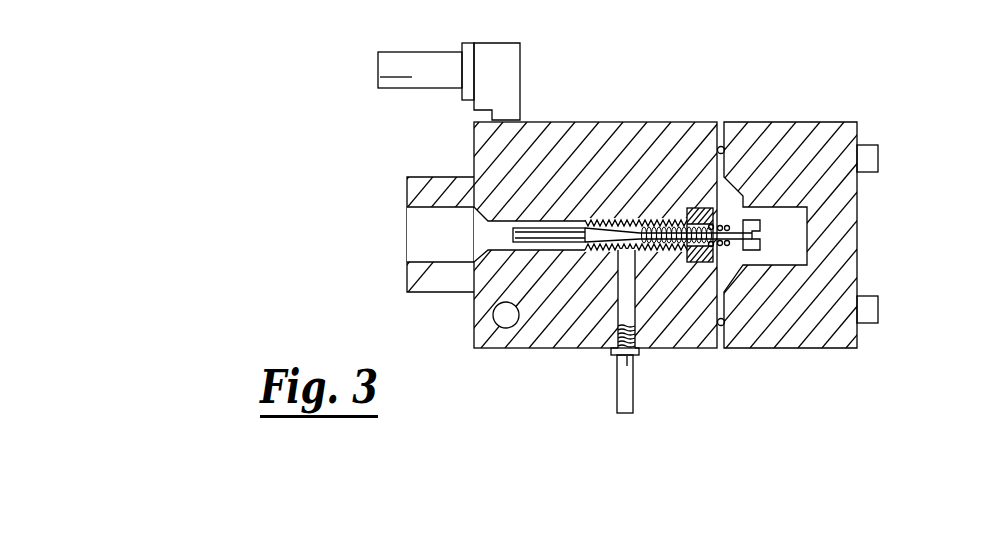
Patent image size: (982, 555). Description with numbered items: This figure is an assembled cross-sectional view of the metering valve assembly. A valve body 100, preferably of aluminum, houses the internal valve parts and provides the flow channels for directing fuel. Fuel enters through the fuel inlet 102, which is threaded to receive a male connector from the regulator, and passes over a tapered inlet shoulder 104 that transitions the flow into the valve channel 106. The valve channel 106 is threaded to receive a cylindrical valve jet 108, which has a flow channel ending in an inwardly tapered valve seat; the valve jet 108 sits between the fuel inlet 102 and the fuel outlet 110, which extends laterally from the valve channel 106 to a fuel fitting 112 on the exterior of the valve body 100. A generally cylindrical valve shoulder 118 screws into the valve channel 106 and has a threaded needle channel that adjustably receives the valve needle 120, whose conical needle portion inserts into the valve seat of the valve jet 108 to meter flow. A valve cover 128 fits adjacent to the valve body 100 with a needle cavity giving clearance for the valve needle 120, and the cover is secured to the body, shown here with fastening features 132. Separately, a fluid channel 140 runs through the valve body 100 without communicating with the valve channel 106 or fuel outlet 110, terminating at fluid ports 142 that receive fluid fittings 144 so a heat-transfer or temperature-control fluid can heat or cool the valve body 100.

The valve body 100 is at (545, 340).
The fuel inlet 102 is at (431, 209).
The tapered inlet shoulder 104 is at (476, 253).
The valve channel 106 is at (497, 230).
The valve jet 108 is at (537, 238).
The fuel outlet 110 is at (630, 313).
The fuel fitting 112 is at (630, 378).
The valve shoulder 118 is at (686, 210).
The valve needle 120 is at (637, 251).
The valve cover 128 is at (778, 343).
The mounting tabs 132 is at (878, 167).
The fluid channel 140 is at (505, 329).
The fluid port 142 is at (521, 118).
The fluid fitting 144 is at (508, 41).